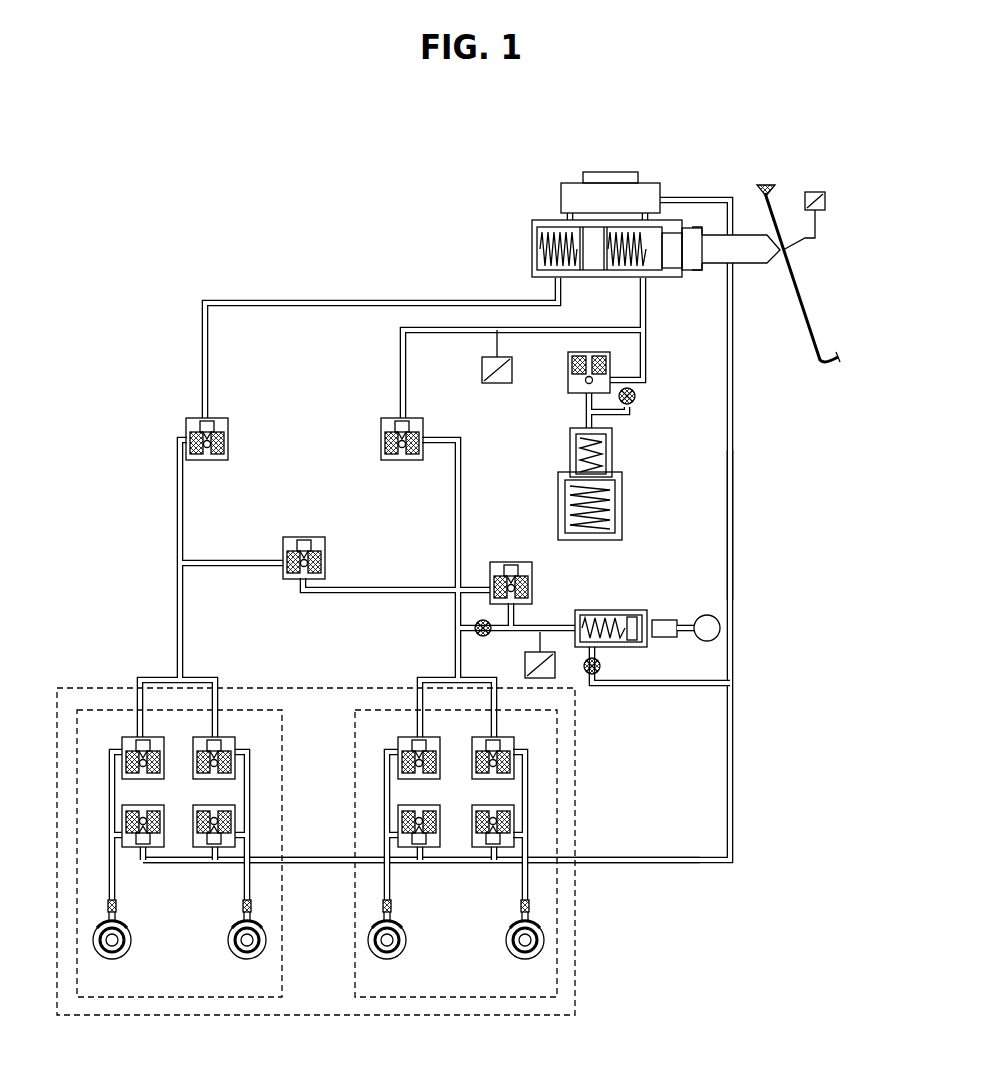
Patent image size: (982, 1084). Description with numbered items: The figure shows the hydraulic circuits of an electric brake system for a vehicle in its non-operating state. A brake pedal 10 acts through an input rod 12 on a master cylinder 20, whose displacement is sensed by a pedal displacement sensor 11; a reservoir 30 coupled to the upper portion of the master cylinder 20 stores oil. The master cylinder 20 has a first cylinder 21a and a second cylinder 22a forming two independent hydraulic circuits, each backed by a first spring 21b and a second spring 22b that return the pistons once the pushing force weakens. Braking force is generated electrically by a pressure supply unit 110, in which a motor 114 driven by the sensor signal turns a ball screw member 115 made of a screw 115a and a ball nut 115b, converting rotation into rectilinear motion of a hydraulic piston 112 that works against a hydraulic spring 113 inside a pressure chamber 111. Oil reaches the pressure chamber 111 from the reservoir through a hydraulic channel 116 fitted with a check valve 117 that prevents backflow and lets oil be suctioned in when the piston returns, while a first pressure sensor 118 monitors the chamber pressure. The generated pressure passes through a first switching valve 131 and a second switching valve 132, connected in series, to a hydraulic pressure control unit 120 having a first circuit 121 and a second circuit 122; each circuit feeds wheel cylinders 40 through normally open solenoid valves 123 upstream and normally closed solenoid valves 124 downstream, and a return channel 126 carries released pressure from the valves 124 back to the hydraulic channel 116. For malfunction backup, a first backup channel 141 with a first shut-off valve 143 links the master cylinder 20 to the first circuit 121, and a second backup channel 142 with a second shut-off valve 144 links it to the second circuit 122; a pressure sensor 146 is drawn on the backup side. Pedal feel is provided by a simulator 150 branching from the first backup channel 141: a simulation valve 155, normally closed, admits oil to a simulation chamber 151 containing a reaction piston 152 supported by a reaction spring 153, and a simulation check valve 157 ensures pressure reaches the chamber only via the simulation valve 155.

The brake pedal 10 is at (798, 292).
The pedal displacement sensor 11 is at (815, 192).
The input rod 12 is at (755, 265).
The master cylinder 20 is at (579, 260).
The first cylinder 21a is at (665, 278).
The first spring 21b is at (628, 270).
The second cylinder 22a is at (593, 270).
The second spring 22b is at (537, 250).
The reservoir 30 is at (571, 183).
The wheel cylinder 40 is at (231, 925).
The pressure supply unit 110 is at (684, 606).
The pressure chamber 111 is at (584, 608).
The hydraulic piston 112 is at (632, 641).
The hydraulic spring 113 is at (606, 612).
The motor 114 is at (705, 642).
The ball screw member 115 is at (677, 584).
The screw 115a is at (654, 618).
The ball nut 115b is at (684, 620).
The hydraulic channel 116 is at (735, 508).
The check valve 117 is at (600, 672).
The first pressure sensor 118 is at (524, 664).
The hydraulic pressure control unit 120 is at (315, 686).
The first circuit 121 is at (376, 708).
The second circuit 122 is at (250, 708).
The NO type solenoid valve 123 is at (397, 742).
The NC type solenoid valve 124 is at (397, 806).
The return channel 126 is at (635, 866).
The first switching valve 131 is at (511, 561).
The second switching valve 132 is at (326, 558).
The first backup channel 141 is at (527, 336).
The second backup channel 142 is at (367, 300).
The first shut-off valve 143 is at (381, 440).
The second shut-off valve 144 is at (228, 437).
The pressure sensor 146 is at (490, 384).
The simulator 150 is at (740, 405).
The simulation chamber 151 is at (622, 505).
The reaction piston 152 is at (613, 436).
The reaction spring 153 is at (605, 517).
The simulation valve 155 is at (568, 387).
The simulation check valve 157 is at (637, 398).